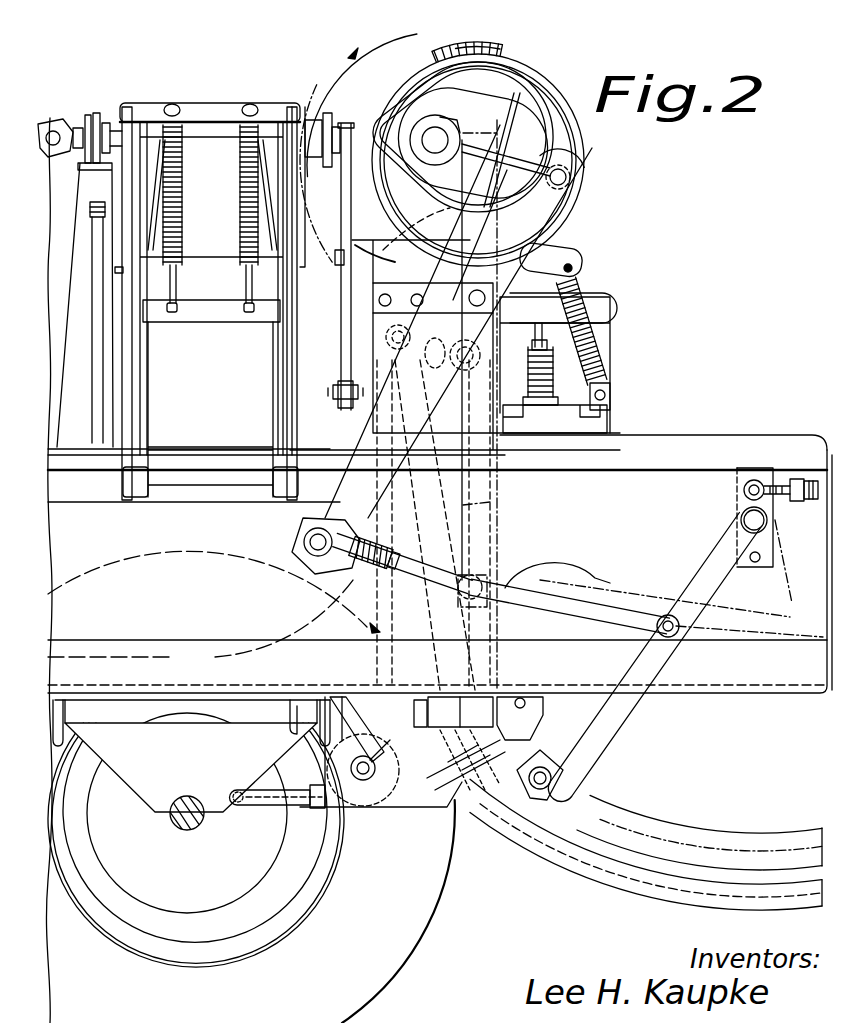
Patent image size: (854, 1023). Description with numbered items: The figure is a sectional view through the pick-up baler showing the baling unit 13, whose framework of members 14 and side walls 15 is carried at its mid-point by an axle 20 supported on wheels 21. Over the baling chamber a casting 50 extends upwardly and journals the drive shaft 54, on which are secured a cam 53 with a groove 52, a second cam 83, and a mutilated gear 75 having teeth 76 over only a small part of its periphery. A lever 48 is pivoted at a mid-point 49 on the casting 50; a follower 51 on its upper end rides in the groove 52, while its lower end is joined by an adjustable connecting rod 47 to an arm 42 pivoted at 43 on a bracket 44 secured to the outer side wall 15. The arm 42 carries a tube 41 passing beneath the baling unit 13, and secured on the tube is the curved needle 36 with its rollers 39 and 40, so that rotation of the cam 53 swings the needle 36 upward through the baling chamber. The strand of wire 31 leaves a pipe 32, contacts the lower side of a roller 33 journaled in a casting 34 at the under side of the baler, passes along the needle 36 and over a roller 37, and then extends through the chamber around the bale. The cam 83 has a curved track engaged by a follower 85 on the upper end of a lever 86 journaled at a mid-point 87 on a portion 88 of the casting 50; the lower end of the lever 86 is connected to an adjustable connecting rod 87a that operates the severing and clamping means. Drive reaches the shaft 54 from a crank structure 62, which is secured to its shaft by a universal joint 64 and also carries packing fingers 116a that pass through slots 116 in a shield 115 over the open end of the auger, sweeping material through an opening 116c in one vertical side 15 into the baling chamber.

The baling unit 13 is at (662, 435).
The members 14 is at (211, 240).
The side walls 15 is at (610, 490).
The axle 20 is at (185, 827).
The wheels 21 is at (410, 915).
The strand of wire 31 is at (503, 538).
The pipe 32 is at (257, 810).
The roller 33 is at (360, 700).
The casting 34 is at (388, 803).
The needle 36 is at (507, 518).
The roller 37 is at (517, 682).
The roller 39 is at (380, 362).
The roller 40 is at (470, 377).
The tube 41 is at (573, 790).
The arm 42 is at (773, 590).
The pivot 43 is at (737, 520).
The bracket 44 is at (737, 492).
The adjustable connecting rod 47 is at (510, 580).
The lever 48 is at (310, 515).
The pivot 49 is at (490, 292).
The casting 50 is at (380, 292).
The follower 51 is at (567, 204).
The groove 52 is at (580, 133).
The cam 53 is at (552, 82).
The drive shaft 54 is at (440, 133).
The crank structure 62 is at (343, 190).
The universal joint 64 is at (60, 128).
The mutilated gear 75 is at (455, 42).
The teeth 76 is at (490, 63).
The cam 83 is at (397, 77).
The follower 85 is at (378, 109).
The lever 86 is at (341, 331).
The pivot 87 is at (337, 266).
The adjustable connecting rod 87a is at (340, 403).
The portion of the casting 88 is at (362, 265).
The shield 115 is at (214, 150).
The slots 116 is at (273, 210).
The packing fingers 116a is at (270, 353).
The opening 116c is at (172, 657).